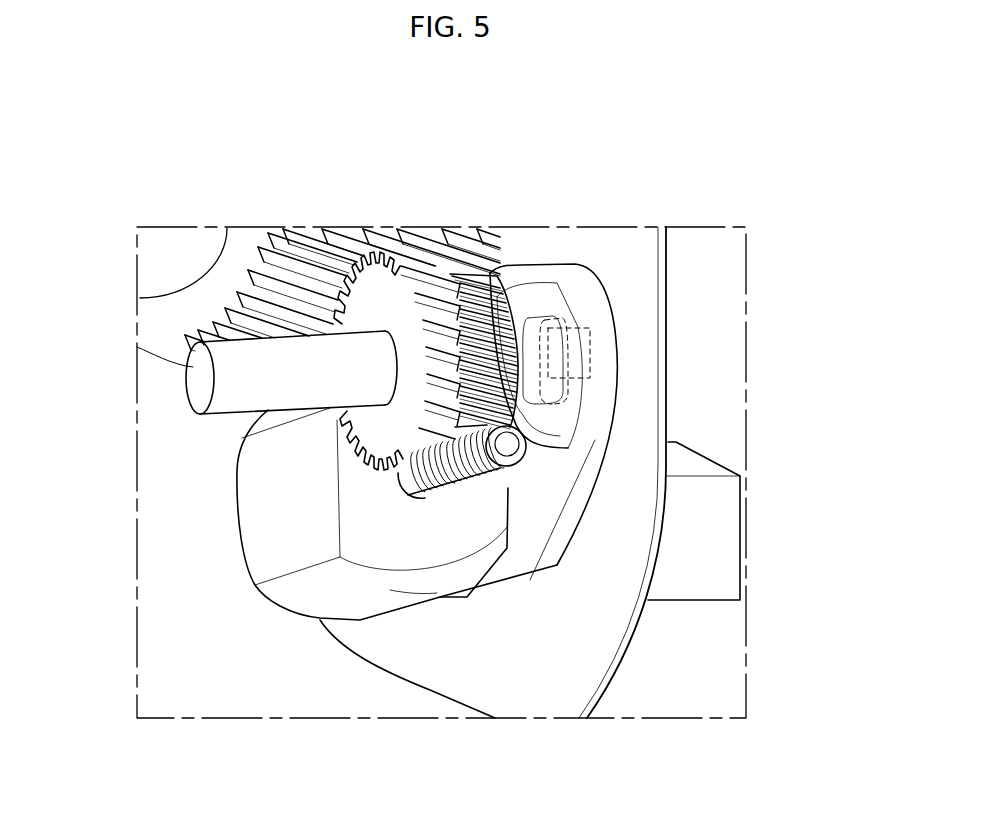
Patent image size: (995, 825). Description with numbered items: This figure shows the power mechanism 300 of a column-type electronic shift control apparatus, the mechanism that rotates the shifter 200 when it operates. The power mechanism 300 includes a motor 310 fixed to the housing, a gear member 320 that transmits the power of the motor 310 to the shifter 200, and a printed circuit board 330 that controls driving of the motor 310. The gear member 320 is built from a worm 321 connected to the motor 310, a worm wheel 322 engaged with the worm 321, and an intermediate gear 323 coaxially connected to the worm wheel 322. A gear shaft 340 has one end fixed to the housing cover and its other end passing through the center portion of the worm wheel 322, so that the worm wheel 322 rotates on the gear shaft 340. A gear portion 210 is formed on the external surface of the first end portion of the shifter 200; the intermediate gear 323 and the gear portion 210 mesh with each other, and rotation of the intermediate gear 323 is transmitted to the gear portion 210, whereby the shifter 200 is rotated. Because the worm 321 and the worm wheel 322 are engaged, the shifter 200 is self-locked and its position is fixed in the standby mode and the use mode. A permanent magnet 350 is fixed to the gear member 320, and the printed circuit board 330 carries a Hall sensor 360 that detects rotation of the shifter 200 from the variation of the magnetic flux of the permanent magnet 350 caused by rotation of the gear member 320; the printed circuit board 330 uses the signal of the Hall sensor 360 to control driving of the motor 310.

The shifter 200 is at (165, 322).
The gear portion 210 is at (300, 276).
The power mechanism 300 is at (672, 369).
The motor 310 is at (272, 503).
The gear member 320 is at (437, 446).
The worm 321 is at (446, 490).
The worm wheel 322 is at (475, 270).
The intermediate gear 323 is at (470, 287).
The printed circuit board 330 is at (558, 685).
The gear shaft 340 is at (202, 383).
The permanent magnet 350 is at (548, 320).
The Hall sensor 360 is at (570, 350).